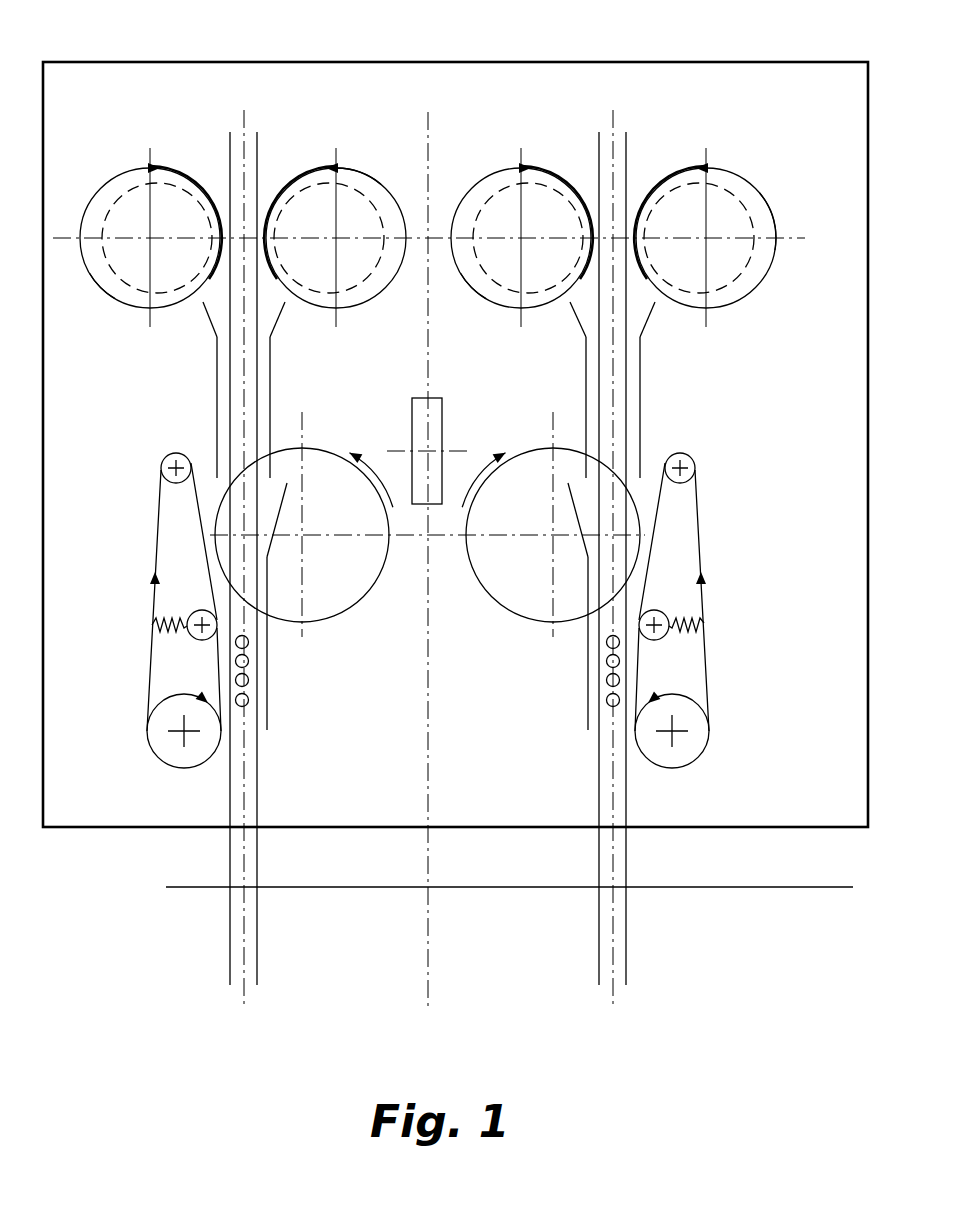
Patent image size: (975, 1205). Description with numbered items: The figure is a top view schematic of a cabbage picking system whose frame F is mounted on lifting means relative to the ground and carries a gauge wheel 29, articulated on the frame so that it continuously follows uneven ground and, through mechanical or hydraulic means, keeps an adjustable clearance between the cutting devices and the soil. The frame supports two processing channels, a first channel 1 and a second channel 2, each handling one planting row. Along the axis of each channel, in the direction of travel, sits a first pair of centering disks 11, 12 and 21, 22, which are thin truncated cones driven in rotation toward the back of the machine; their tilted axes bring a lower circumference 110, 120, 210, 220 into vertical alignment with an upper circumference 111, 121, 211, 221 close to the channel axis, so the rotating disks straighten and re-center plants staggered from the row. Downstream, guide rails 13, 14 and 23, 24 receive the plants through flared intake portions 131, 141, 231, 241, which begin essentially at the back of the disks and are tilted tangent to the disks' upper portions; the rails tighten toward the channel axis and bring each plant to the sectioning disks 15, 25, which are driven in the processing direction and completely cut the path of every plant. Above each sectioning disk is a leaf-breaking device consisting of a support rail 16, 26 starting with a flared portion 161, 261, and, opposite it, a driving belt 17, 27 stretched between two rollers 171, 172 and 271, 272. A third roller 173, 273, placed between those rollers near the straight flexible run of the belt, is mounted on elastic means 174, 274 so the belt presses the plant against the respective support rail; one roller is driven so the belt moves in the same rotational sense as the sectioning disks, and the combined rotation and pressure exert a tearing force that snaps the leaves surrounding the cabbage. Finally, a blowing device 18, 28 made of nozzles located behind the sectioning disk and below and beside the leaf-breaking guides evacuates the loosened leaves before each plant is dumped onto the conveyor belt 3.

The frame F is at (780, 68).
The first channel 1 is at (624, 122).
The second channel 2 is at (256, 122).
The centering disk 11 is at (735, 182).
The lower circumference 110 is at (752, 256).
The upper circumference 111 is at (776, 212).
The centering disk 12 is at (528, 176).
The lower circumference 120 is at (500, 181).
The upper circumference 121 is at (488, 298).
The guide rail 13 is at (585, 392).
The flared portion 131 is at (577, 316).
The guide rail 14 is at (643, 387).
The flared portion 141 is at (648, 314).
The sectioning disk 15 is at (505, 597).
The support rail 16 is at (587, 635).
The flared portion 161 is at (573, 505).
The driving belt 17 is at (702, 539).
The roller 171 is at (694, 469).
The roller 172 is at (678, 761).
The third roller 173 is at (659, 634).
The elastic means 174 is at (696, 613).
The blowing device 18 is at (605, 680).
The centering disk 21 is at (332, 170).
The lower circumference 210 is at (380, 215).
The upper circumference 211 is at (358, 172).
The centering disk 22 is at (115, 182).
The lower circumference 220 is at (101, 224).
The upper circumference 221 is at (101, 290).
The guide rail 23 is at (272, 386).
The flared portion 231 is at (281, 316).
The guide rail 24 is at (216, 398).
The flared portion 241 is at (209, 316).
The sectioning disk 25 is at (350, 597).
The support rail 26 is at (267, 640).
The flared portion 261 is at (280, 520).
The driving belt 27 is at (152, 573).
The roller 271 is at (162, 462).
The roller 272 is at (173, 762).
The third roller 273 is at (197, 639).
The elastic means 274 is at (160, 622).
The blowing device 28 is at (250, 680).
The gauge wheel 29 is at (412, 423).
The conveyor belt 3 is at (481, 965).